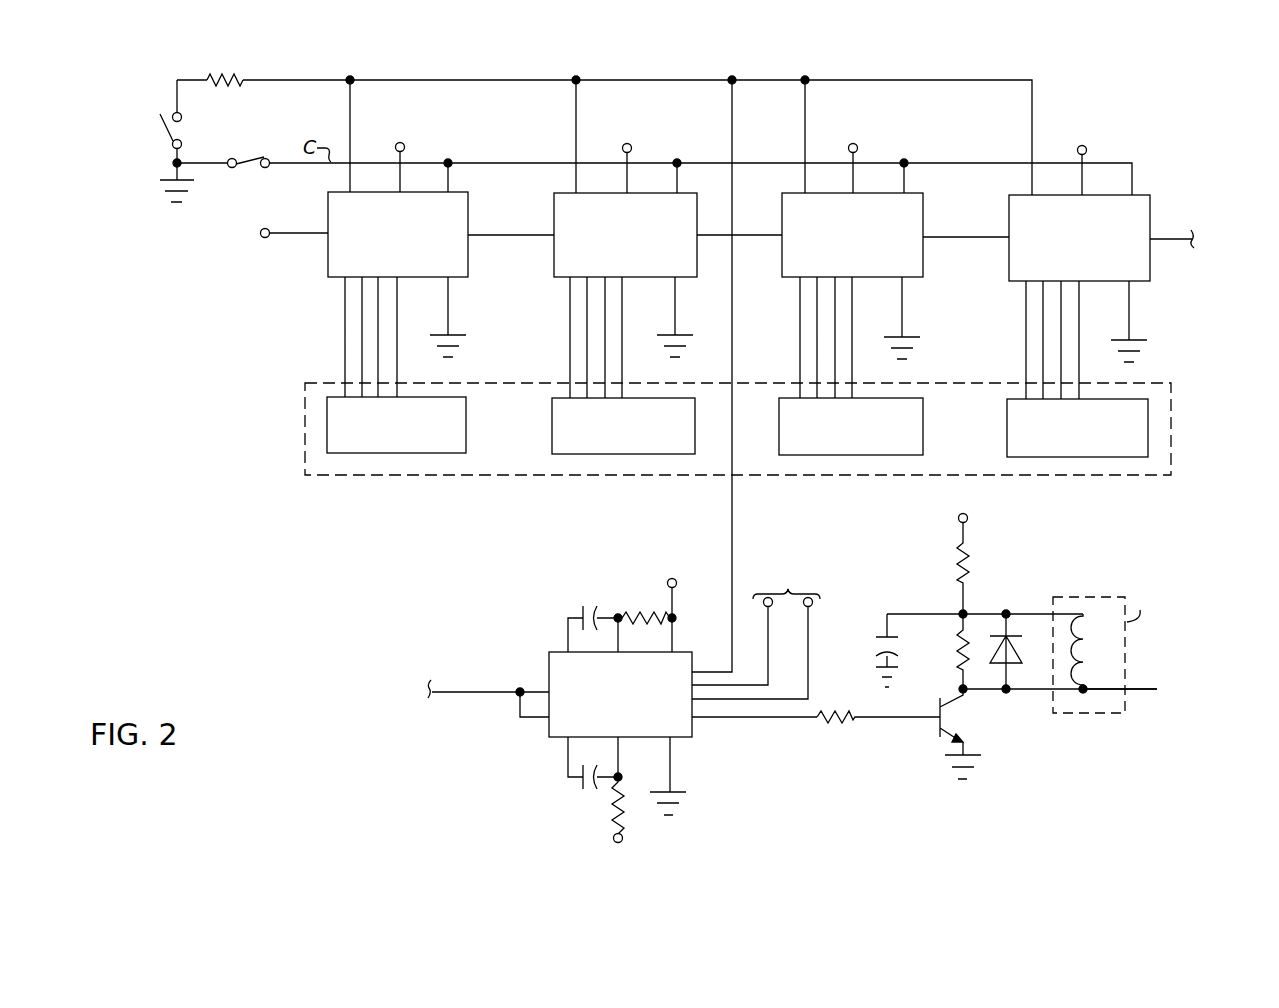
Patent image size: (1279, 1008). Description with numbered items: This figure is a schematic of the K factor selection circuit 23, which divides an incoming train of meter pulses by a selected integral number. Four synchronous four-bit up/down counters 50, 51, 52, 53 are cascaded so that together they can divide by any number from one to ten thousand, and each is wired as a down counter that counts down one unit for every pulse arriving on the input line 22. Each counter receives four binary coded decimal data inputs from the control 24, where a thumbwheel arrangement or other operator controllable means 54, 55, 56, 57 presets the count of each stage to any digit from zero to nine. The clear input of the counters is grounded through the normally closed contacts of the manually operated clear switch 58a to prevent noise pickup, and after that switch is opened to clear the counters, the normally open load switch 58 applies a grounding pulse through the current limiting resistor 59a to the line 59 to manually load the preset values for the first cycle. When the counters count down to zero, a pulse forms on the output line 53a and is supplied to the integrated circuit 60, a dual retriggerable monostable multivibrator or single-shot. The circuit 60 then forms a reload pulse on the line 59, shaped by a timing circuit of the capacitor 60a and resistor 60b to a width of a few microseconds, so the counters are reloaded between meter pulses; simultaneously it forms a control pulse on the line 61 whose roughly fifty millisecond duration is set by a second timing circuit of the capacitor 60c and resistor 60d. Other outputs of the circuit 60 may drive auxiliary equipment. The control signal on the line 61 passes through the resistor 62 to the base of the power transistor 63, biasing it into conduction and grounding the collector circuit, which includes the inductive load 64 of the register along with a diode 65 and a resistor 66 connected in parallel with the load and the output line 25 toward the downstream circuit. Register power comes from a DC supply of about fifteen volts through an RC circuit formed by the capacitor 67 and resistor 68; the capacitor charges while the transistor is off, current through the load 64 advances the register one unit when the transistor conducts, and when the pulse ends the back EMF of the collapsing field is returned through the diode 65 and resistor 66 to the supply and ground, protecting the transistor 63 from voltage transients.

The K factor selection circuit 23 is at (172, 619).
The load/reload line 59 is at (458, 79).
The current limiting resistor 59a is at (234, 58).
The load switch 58 is at (164, 133).
The clear switch 58a is at (248, 170).
The input line 22 is at (274, 240).
The synchronous 4-bit up/down counter 50 is at (468, 262).
The synchronous 4-bit up/down counter 51 is at (697, 270).
The synchronous 4-bit up/down counter 52 is at (923, 272).
The synchronous 4-bit up/down counter 53 is at (1150, 274).
The output line 53a is at (1188, 234).
The control 24 is at (305, 384).
The BCD input thumbwheel switch 54 is at (466, 437).
The BCD input thumbwheel switch 55 is at (708, 432).
The BCD input thumbwheel switch 56 is at (923, 438).
The BCD input thumbwheel switch 57 is at (1148, 430).
The monostable multivibrator integrated circuit 60 is at (549, 661).
The capacitor 60a is at (573, 613).
The resistor 60b is at (649, 600).
The capacitor 60c is at (572, 798).
The resistor 60d is at (625, 815).
The output line 61 is at (733, 720).
The resistor 62 is at (832, 722).
The power transistor 63 is at (935, 730).
The inductive load 64 is at (1100, 646).
The diode 65 is at (1012, 668).
The resistor 66 is at (956, 652).
The capacitor 67 is at (880, 638).
The resistor 68 is at (968, 568).
The output line to circuit 28 25 is at (1133, 689).